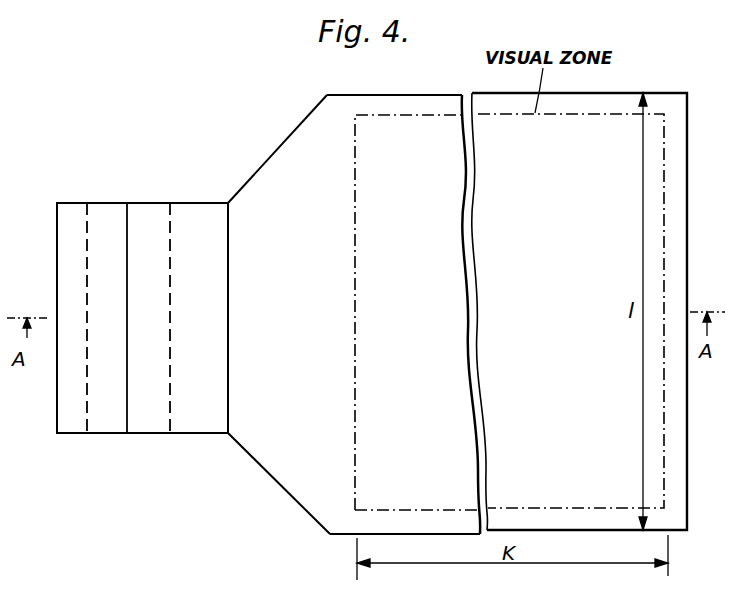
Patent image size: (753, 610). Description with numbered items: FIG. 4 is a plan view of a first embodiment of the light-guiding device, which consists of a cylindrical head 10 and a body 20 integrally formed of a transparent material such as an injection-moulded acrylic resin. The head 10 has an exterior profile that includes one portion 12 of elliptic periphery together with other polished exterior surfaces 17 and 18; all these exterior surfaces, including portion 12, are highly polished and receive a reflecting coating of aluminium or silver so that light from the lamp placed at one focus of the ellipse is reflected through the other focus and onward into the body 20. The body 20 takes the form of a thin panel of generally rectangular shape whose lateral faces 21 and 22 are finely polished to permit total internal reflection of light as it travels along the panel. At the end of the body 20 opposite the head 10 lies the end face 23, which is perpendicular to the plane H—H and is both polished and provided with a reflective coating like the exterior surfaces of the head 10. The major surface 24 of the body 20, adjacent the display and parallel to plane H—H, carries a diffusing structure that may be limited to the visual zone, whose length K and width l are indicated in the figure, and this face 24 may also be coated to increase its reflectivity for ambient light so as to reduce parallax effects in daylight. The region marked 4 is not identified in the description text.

The light guide body 4 is at (191, 222).
The cylindrical head 10 is at (140, 203).
The portion of elliptic periphery 12 is at (66, 240).
The exterior surface 17 is at (72, 436).
The exterior surface 18 is at (97, 203).
The body 20 is at (430, 86).
The lateral face 21 is at (338, 537).
The lateral face 22 is at (340, 94).
The end face 23 is at (687, 420).
The major surface 24 is at (610, 128).